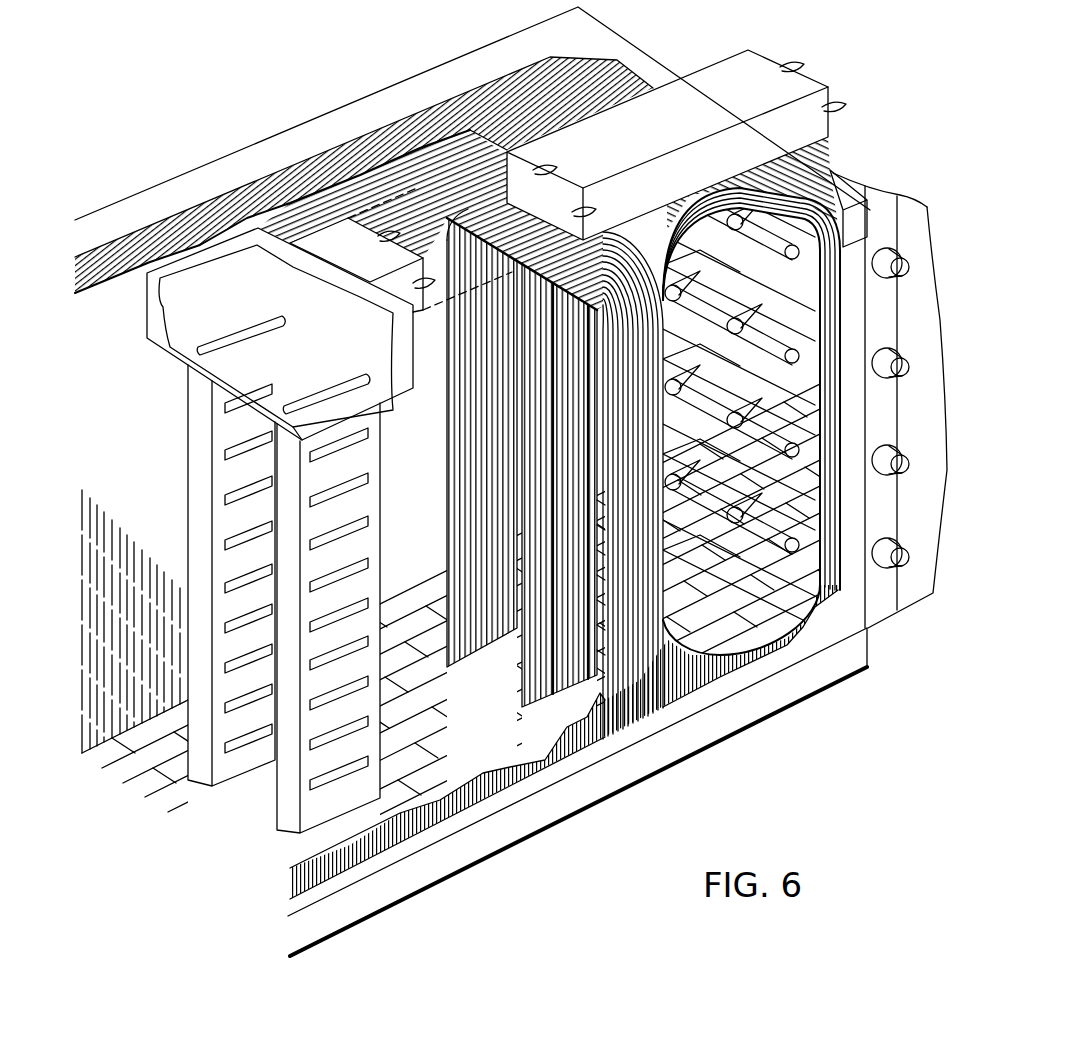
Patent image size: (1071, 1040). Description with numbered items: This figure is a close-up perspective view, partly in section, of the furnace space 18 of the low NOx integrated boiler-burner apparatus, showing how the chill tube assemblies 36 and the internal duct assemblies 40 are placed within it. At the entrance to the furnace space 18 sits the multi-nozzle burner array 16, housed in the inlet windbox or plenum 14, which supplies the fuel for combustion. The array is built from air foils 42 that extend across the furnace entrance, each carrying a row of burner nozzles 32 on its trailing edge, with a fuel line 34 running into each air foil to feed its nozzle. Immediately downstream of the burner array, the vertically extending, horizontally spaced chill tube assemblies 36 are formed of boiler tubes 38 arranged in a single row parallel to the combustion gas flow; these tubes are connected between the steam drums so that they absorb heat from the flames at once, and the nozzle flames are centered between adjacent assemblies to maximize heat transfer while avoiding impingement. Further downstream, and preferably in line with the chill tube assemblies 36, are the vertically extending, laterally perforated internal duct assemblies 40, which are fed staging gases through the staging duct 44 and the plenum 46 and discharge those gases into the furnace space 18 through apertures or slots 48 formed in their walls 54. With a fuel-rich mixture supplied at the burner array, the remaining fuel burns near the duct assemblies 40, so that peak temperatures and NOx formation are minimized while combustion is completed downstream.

The inlet windbox or plenum 14 is at (898, 208).
The multi-nozzle burner (MNB) array 16 is at (893, 622).
The furnace space 18 is at (428, 430).
The burner nozzles 32 is at (700, 280).
The fuel line 34 is at (905, 465).
The chill tube assemblies 36 is at (497, 492).
The boiler tubes 38 is at (455, 540).
The internal duct assemblies 40 is at (269, 599).
The air foils 42 is at (790, 305).
The staging duct 44 is at (700, 127).
The plenum 46 is at (303, 376).
The apertures or slots 48 is at (245, 478).
The walls 54 is at (240, 605).